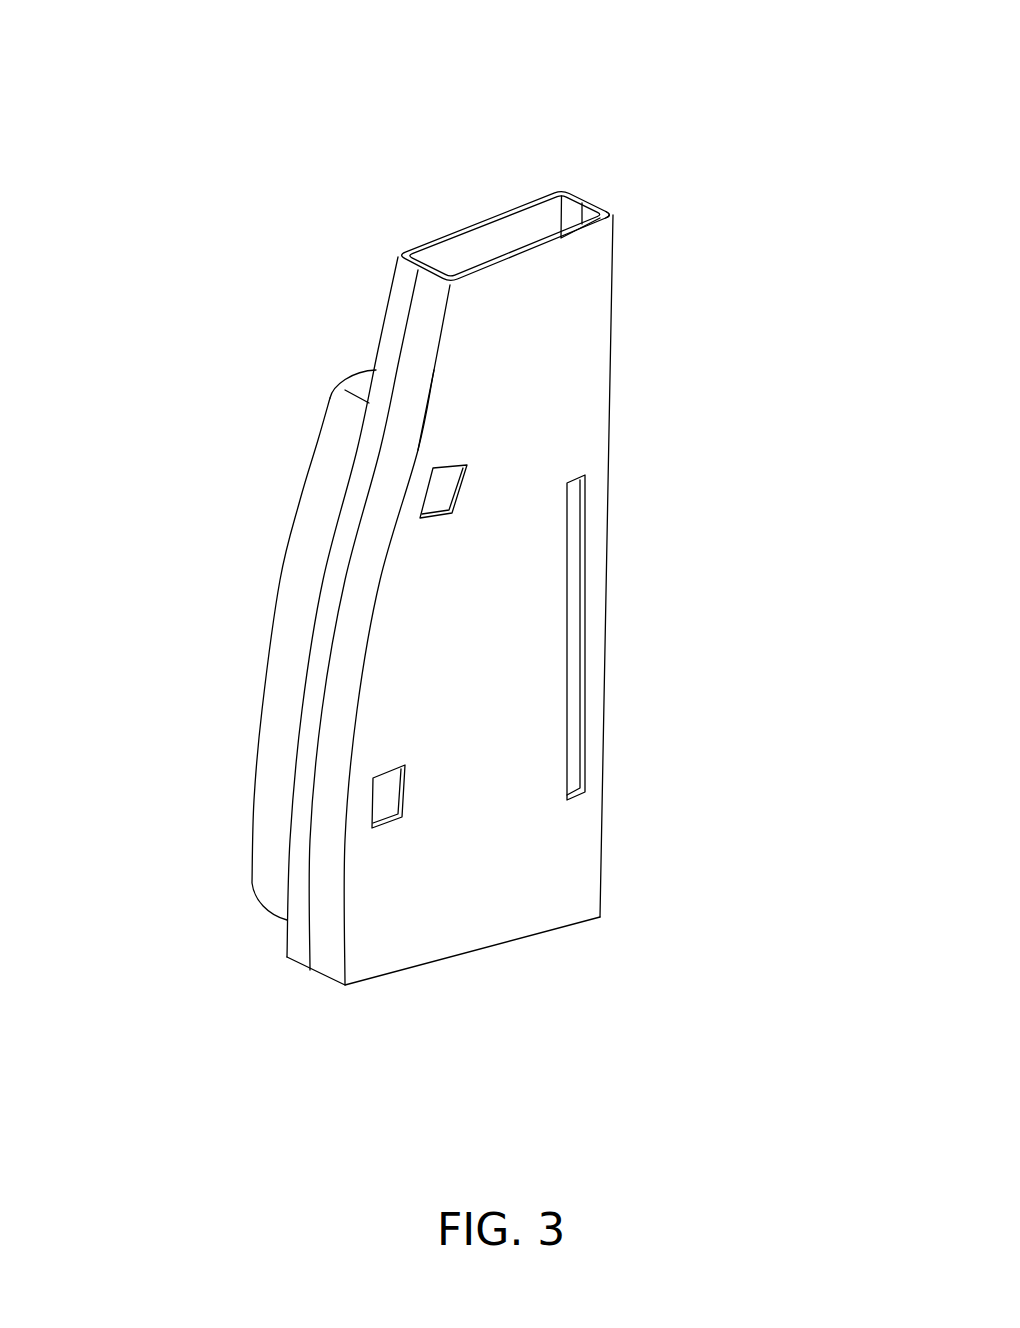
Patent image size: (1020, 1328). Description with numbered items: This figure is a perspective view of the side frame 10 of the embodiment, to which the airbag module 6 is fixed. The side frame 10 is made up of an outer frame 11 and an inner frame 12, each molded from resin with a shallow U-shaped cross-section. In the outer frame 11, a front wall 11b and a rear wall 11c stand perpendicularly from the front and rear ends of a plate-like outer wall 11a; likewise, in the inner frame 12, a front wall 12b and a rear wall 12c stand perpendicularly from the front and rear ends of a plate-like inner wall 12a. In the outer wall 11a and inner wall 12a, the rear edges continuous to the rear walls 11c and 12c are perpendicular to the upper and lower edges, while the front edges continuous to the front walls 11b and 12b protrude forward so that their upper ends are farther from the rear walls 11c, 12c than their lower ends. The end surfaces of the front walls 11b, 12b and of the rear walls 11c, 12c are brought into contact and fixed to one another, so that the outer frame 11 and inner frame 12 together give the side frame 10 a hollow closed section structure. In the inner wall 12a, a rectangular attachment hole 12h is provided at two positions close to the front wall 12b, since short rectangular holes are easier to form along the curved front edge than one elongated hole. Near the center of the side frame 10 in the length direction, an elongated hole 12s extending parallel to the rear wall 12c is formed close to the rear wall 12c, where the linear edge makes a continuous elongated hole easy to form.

The airbag module 6 is at (323, 462).
The side frame 10 is at (598, 207).
The outer frame 11 is at (448, 15).
The outer wall 11a is at (472, 225).
The front wall 11b is at (392, 328).
The rear wall 11c is at (582, 193).
The inner frame 12 is at (817, 208).
The inner wall 12a is at (596, 303).
The front wall 12b is at (422, 382).
The rear wall 12c is at (613, 212).
The attachment hole 12h is at (427, 496).
The elongated hole 12s is at (583, 600).